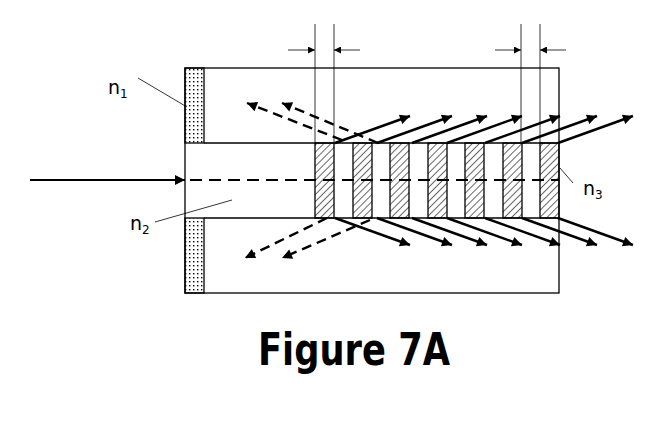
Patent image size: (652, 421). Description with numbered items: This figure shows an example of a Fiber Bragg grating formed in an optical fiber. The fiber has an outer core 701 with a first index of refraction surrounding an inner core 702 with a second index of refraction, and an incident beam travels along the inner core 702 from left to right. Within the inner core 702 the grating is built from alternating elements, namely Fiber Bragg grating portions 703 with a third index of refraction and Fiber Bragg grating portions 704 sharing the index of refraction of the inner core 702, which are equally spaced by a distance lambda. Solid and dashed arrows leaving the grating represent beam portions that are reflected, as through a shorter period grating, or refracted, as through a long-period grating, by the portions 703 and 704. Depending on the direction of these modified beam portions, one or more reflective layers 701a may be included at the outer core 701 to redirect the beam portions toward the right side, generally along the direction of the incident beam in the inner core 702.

The outer core 701 is at (372, 87).
The reflective layer 701a is at (188, 68).
The inner core 702 is at (223, 162).
The Fiber Bragg grating portion 703 is at (317, 160).
The Fiber Bragg grating portion 704 is at (343, 198).